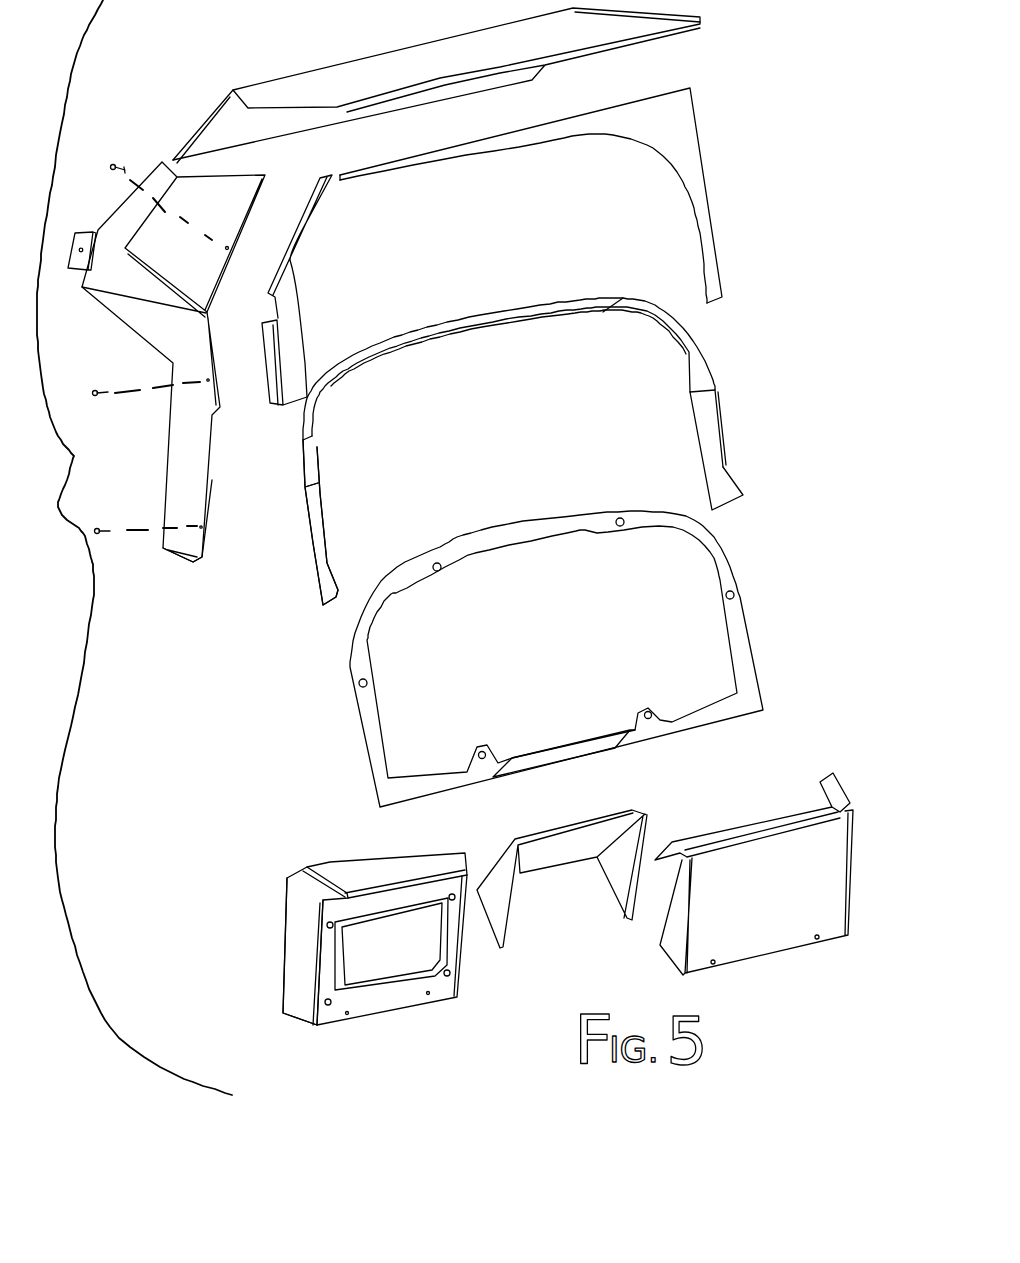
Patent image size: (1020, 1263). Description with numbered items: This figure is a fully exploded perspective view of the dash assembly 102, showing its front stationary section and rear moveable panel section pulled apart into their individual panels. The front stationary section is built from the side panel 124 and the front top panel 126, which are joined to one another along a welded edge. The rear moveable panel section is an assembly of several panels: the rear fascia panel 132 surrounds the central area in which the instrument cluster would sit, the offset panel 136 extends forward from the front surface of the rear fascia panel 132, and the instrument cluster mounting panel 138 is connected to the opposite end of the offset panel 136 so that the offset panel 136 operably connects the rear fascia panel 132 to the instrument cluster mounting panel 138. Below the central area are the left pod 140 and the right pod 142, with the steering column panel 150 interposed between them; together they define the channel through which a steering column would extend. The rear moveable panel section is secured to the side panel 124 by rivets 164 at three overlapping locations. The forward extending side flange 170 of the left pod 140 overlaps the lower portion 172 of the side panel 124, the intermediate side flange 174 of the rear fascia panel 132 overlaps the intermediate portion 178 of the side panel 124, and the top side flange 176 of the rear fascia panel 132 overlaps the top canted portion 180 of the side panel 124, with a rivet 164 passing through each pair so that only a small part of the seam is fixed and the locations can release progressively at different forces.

The dash assembly 102 is at (60, 504).
The side panel 124 is at (232, 193).
The front top panel 126 is at (388, 56).
The rear fascia panel 132 is at (690, 137).
The offset panel 136 is at (692, 358).
The instrument cluster mounting panel 138 is at (727, 563).
The left pod 140 is at (295, 912).
The right pod 142 is at (767, 853).
The steering column panel 150 is at (557, 858).
The rivets 164 is at (118, 160).
The side flange 170 is at (302, 963).
The lower portion 172 is at (187, 512).
The intermediate side flange 174 is at (268, 370).
The top side flange 176 is at (297, 228).
The intermediate portion 178 is at (200, 350).
The top canted portion 180 is at (227, 217).